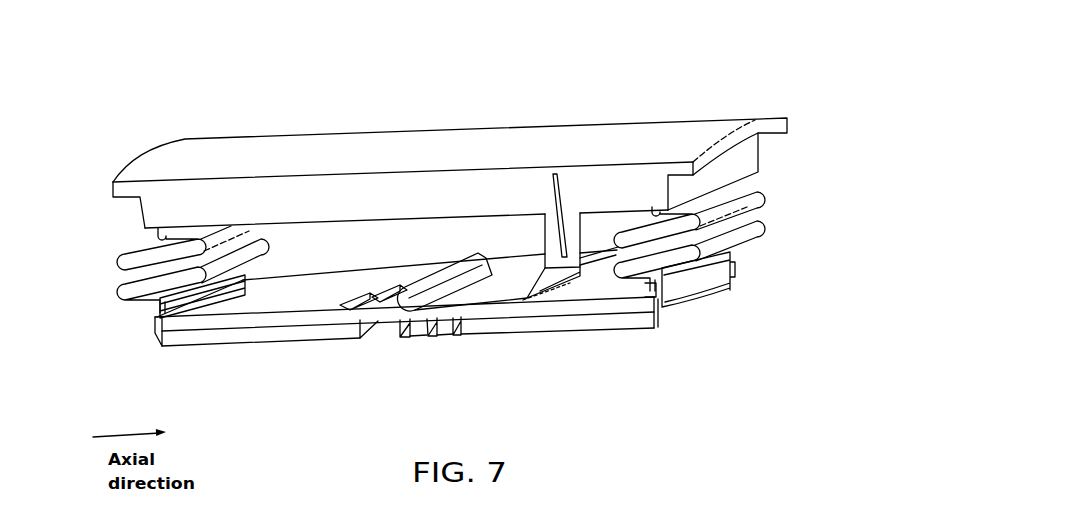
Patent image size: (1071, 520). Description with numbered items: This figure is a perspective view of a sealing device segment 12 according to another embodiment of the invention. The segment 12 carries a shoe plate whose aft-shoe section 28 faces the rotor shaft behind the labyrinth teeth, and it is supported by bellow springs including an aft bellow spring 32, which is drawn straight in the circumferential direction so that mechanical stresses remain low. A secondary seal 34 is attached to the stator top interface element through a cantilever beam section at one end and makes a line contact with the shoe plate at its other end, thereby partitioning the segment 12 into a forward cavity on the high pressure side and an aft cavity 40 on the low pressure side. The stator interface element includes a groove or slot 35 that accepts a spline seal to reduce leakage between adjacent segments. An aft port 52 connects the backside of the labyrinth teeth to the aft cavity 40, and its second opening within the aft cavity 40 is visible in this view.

The sealing device segment 12 is at (724, 62).
The aft-shoe section 28 is at (509, 334).
The aft bellow spring 32 is at (766, 199).
The secondary seal 34 is at (483, 280).
The groove or slot 35 is at (552, 181).
The aft cavity 40 is at (601, 228).
The aft port 52 is at (567, 299).